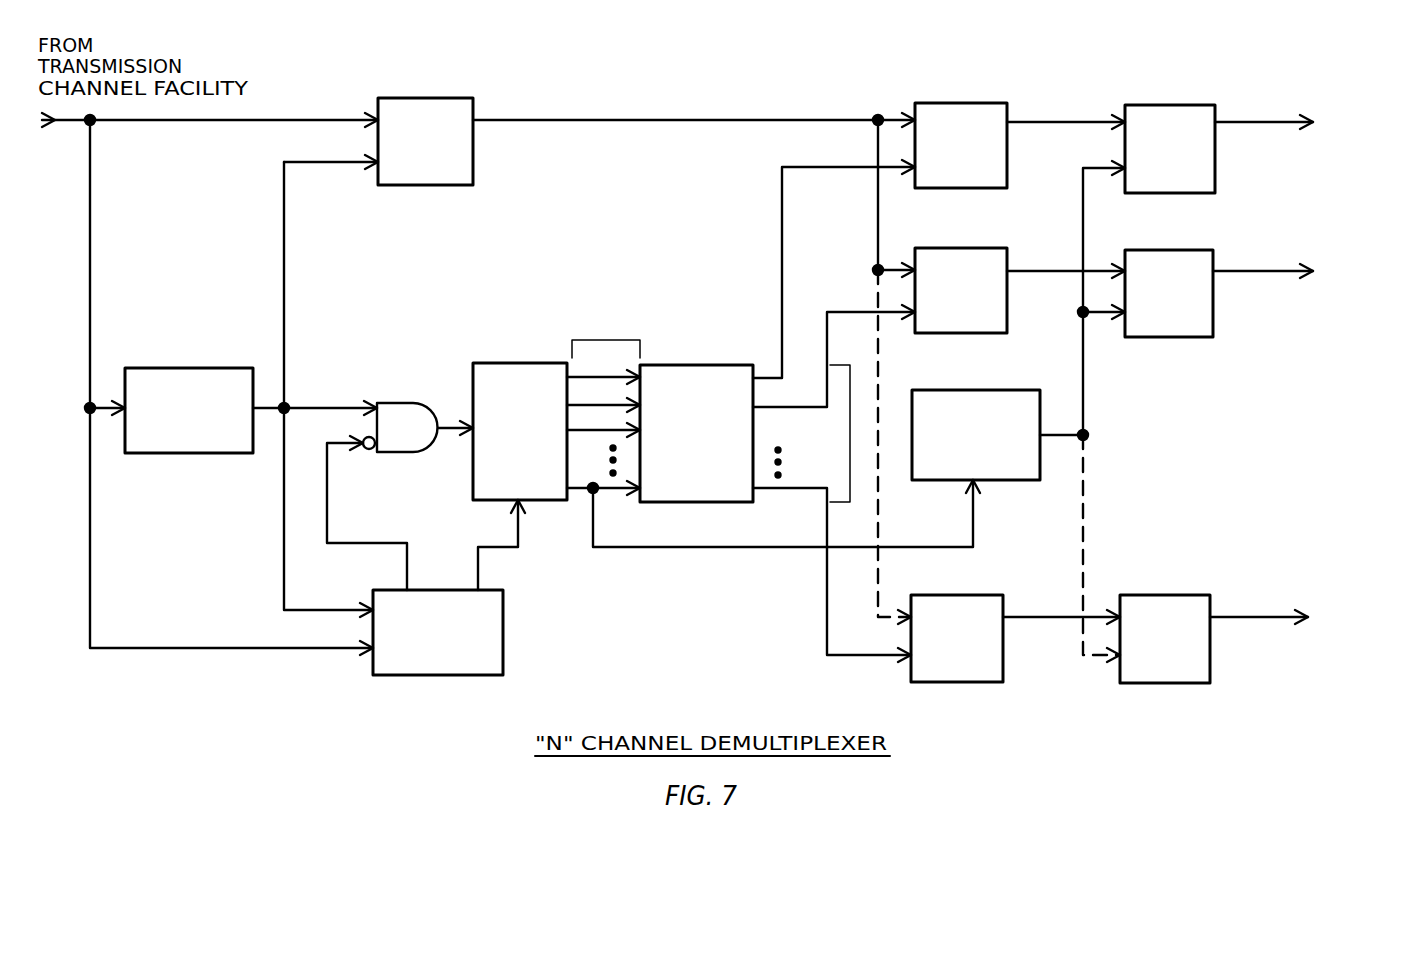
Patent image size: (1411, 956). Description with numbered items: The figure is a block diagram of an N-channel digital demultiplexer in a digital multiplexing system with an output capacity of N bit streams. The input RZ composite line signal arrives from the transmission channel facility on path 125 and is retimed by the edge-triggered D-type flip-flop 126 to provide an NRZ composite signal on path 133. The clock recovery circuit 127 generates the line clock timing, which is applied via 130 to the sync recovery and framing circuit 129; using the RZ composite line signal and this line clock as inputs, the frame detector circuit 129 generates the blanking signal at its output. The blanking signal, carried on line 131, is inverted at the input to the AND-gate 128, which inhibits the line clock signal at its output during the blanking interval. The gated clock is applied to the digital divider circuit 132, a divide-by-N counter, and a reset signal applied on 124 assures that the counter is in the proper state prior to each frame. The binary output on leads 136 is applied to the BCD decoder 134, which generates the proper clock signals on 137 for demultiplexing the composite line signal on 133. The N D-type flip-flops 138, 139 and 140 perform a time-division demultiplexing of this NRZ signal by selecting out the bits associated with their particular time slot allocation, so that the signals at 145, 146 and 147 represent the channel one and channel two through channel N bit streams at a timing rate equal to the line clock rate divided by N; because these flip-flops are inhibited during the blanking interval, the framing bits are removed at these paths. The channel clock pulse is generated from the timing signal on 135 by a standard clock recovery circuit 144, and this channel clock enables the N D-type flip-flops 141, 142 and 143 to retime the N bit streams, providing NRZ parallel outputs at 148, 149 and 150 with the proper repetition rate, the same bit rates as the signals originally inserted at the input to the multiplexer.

The reset signal path 124 is at (506, 545).
The input path 125 is at (90, 246).
The edge-triggered D-type flip-flop 126 is at (412, 98).
The clock recovery circuit 127 is at (203, 368).
The AND-gate 128 is at (388, 403).
The sync recovery and framing circuit 129 is at (503, 633).
The f2 clock path 130 is at (278, 413).
The framing feedback line fb 131 is at (327, 530).
The digital divider circuit 132 is at (520, 363).
The NRZ composite signal path 133 is at (728, 122).
The BCD decoder 134 is at (700, 365).
The timing signal f1' path 135 is at (693, 547).
The binary output leads 136 is at (606, 340).
The decoder clock signal outputs 137 is at (850, 435).
The D-type flip-flop 138 is at (953, 103).
The D-type flip-flop 139 is at (953, 248).
The D-type flip-flop 140 is at (947, 595).
The D-type flip-flop 141 is at (1156, 105).
The D-type flip-flop 142 is at (1153, 250).
The D-type flip-flop 143 is at (1153, 595).
The clock recovery circuit 144 is at (985, 390).
The channel 1 output path 145 is at (1032, 124).
The channel 2 output path 146 is at (1032, 273).
The channel N output path 147 is at (1027, 619).
The channel 1 retimed output 148 is at (1248, 124).
The channel 2 retimed output 149 is at (1245, 273).
The channel N retimed output 150 is at (1240, 619).